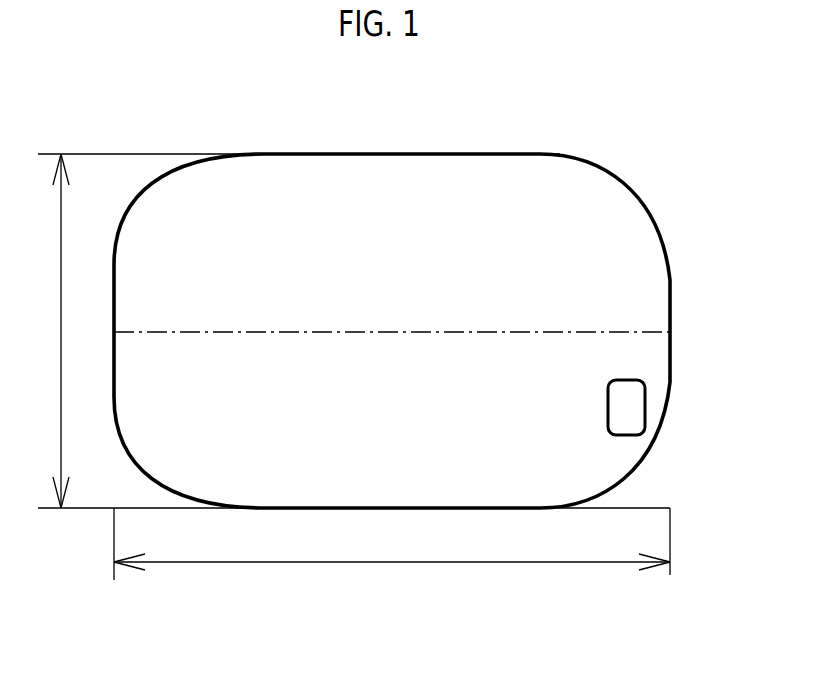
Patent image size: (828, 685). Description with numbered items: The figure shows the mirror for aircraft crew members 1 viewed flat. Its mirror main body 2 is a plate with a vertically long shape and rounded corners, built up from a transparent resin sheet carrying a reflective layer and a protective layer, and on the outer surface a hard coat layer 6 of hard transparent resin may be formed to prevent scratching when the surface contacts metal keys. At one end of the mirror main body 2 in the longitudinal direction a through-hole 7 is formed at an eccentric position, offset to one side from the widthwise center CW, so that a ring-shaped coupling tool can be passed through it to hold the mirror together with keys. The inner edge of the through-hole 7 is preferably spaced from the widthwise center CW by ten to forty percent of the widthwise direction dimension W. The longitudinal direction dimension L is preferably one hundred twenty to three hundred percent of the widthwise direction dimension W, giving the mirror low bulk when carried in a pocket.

The mirror for aircraft crew members 1 is at (607, 148).
The mirror main body 2 is at (653, 228).
The hard coat layer 6 is at (653, 313).
The through-hole 7 is at (640, 403).
The widthwise center CW is at (253, 332).
The widthwise direction dimension W is at (354, 331).
The longitudinal direction dimension L is at (392, 544).